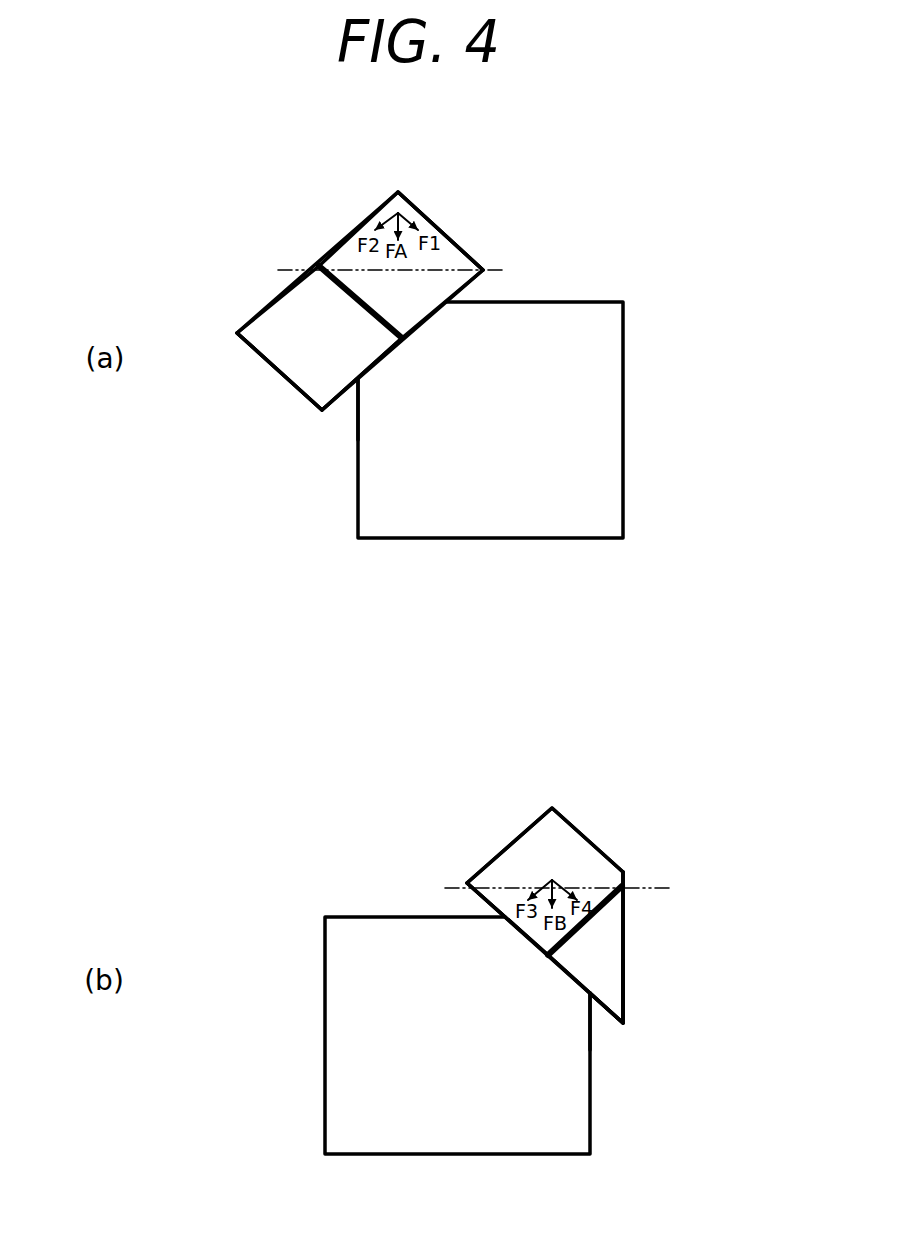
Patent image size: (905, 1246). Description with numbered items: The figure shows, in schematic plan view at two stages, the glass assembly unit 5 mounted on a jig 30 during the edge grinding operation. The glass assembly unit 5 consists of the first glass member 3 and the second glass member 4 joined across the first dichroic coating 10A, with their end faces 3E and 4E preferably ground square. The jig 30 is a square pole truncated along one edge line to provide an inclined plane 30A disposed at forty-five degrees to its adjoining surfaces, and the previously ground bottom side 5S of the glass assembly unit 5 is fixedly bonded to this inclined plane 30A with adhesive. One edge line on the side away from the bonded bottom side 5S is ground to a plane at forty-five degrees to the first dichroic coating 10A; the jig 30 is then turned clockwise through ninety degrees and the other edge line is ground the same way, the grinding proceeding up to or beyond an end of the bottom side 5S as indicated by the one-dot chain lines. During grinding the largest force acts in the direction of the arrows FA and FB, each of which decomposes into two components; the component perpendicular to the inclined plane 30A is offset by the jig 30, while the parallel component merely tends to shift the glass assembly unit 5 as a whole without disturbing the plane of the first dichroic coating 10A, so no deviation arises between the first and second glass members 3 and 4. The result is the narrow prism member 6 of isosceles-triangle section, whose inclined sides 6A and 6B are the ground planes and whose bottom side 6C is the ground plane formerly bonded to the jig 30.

The first glass member 3 is at (303, 396).
The end face of first glass member 3E is at (270, 350).
The second glass member 4 is at (423, 212).
The end face of second glass member 4E is at (435, 255).
The glass assembly unit 5 is at (288, 250).
The bottom side of glass assembly unit 5S is at (332, 404).
The prism member 6 is at (540, 807).
The inclined side of prism member 6A is at (625, 948).
The inclined side of prism member 6B is at (573, 888).
The bottom side of prism member 6C is at (605, 1018).
The first dichroic coating 10A is at (345, 286).
The jig 30 is at (613, 482).
The inclined plane of jig 30A is at (363, 372).